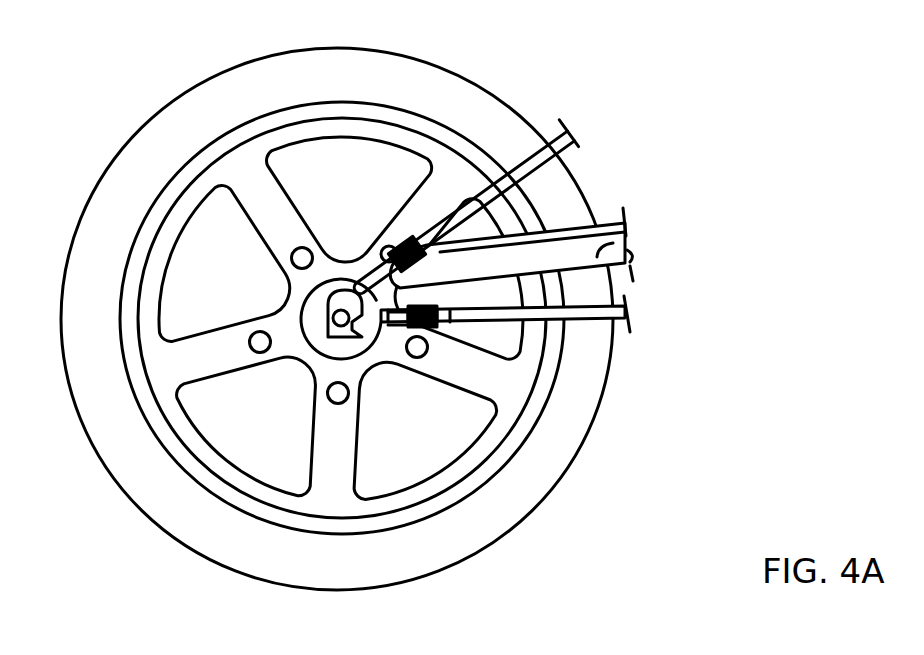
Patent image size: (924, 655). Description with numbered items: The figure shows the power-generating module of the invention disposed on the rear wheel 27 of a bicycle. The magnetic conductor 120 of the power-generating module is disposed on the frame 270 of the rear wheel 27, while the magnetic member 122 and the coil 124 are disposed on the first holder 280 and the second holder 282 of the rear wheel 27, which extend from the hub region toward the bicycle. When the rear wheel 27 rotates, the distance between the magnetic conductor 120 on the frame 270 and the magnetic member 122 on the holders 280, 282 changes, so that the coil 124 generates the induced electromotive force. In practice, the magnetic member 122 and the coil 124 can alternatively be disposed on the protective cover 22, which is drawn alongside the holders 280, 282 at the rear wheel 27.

The rear wheel 27 is at (203, 80).
The frame 270 is at (243, 173).
The first holder 280 is at (573, 133).
The protective cover 22 is at (632, 243).
The holder 282 is at (630, 310).
The magnetic member 122 is at (450, 317).
The coil 124 is at (422, 330).
The magnetic conductor 120 is at (338, 393).